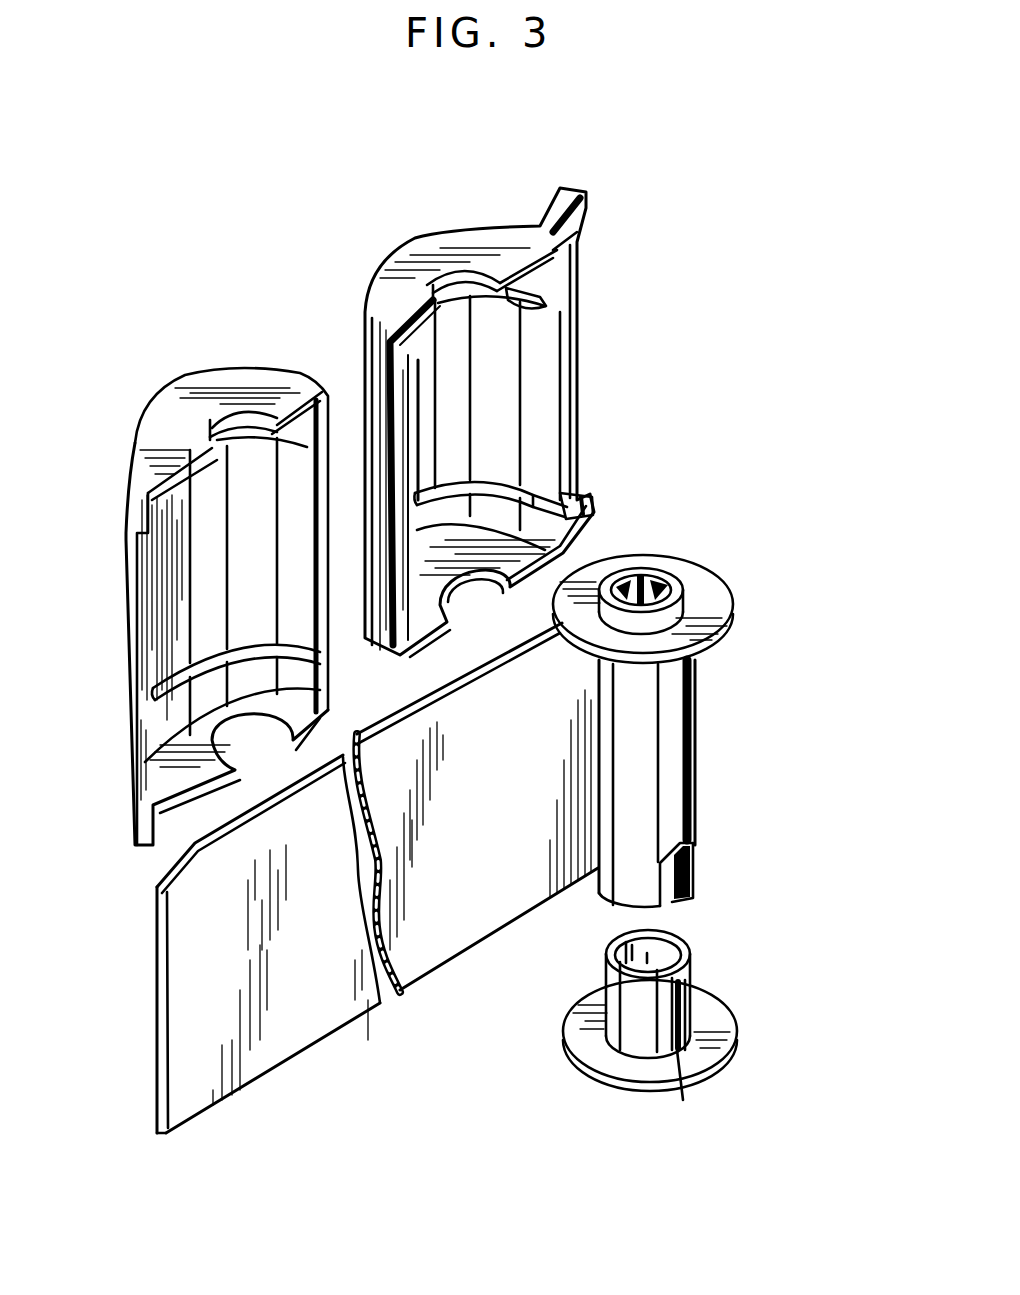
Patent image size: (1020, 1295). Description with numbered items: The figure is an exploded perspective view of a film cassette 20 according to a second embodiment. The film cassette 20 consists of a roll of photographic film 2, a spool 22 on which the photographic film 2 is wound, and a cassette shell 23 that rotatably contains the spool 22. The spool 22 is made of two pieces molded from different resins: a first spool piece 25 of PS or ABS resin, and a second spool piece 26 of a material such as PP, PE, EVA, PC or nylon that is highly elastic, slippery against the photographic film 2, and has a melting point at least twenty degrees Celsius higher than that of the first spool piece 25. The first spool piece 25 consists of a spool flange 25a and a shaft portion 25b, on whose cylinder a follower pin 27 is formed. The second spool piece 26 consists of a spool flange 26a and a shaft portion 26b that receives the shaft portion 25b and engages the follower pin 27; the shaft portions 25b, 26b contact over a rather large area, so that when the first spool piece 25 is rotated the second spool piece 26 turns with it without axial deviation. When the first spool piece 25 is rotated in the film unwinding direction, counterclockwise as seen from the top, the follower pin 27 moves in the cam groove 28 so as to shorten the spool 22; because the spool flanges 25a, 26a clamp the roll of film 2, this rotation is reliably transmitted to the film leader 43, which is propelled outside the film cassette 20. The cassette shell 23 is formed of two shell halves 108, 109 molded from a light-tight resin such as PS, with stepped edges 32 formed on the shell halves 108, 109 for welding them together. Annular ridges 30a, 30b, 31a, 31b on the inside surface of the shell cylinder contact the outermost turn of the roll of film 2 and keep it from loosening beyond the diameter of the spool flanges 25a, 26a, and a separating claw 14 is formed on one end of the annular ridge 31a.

The photographic film 2 is at (337, 881).
The separating claw 14 is at (590, 510).
The film cassette 20 is at (377, 485).
The spool 22 is at (694, 820).
The cassette shell 23 is at (377, 485).
The first spool piece 25 is at (672, 1019).
The spool flange 25a is at (737, 1040).
The shaft portion 25b is at (620, 1020).
The second spool piece 26 is at (694, 708).
The spool flange 26a is at (703, 590).
The shaft portion 26b is at (697, 683).
The follower pin 27 is at (683, 1100).
The cam groove 28 is at (690, 882).
The annular ridge 30a is at (177, 646).
The annular ridge 30b is at (298, 405).
The annular ridge 31a is at (505, 475).
The annular ridge 31b is at (530, 297).
The stepped edges 32 is at (440, 335).
The film leader 43 is at (180, 1082).
The shell half 108 is at (203, 547).
The shell half 109 is at (530, 394).